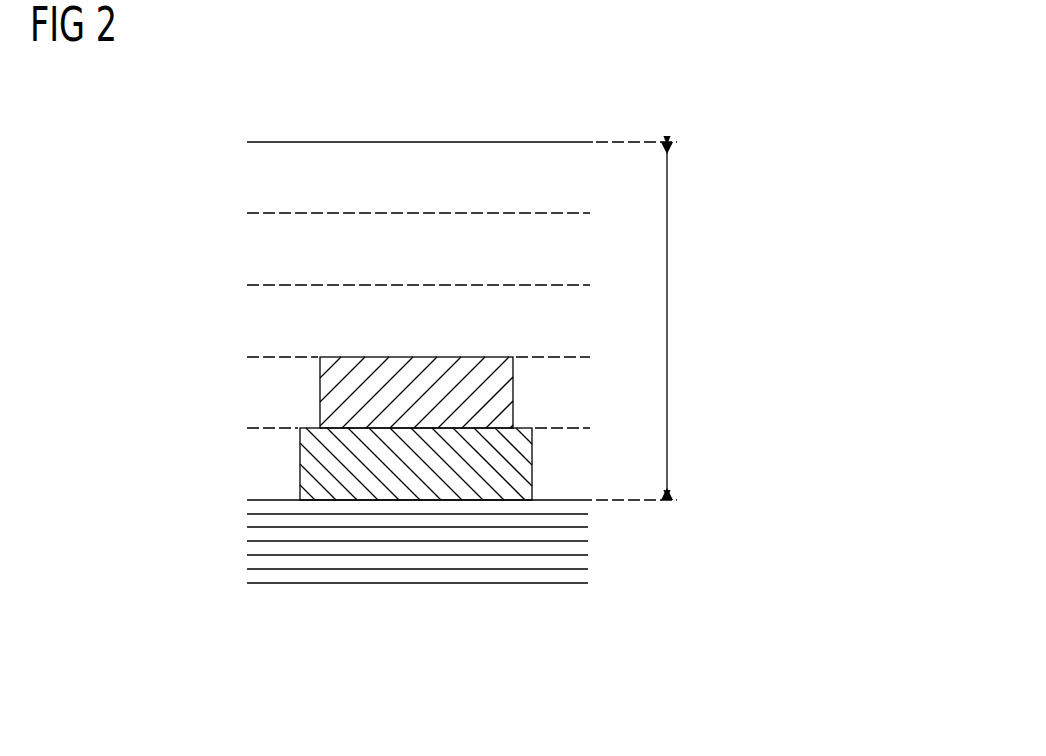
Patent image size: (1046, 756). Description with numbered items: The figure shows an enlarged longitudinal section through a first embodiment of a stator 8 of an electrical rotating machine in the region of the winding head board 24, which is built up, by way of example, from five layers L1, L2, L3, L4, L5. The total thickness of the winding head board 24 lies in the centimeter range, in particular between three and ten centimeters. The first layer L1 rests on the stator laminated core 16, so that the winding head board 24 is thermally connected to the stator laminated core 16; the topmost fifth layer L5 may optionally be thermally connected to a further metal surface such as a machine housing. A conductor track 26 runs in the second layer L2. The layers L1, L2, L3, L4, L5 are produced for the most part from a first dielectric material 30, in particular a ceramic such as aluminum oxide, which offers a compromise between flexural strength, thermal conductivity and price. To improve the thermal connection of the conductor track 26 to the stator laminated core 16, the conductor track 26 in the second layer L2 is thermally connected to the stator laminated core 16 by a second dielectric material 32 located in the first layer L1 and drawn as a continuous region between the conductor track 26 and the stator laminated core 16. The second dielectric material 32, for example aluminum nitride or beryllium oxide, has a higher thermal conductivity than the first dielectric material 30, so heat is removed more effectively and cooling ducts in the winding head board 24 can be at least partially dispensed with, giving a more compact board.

The stator 8 is at (677, 110).
The winding head board 24 is at (517, 173).
The first dielectric material 30 is at (262, 320).
The conductor track 26 is at (320, 396).
The second dielectric material 32 is at (300, 470).
The stator laminated core 16 is at (549, 578).
The first layer L1 is at (575, 469).
The second layer L2 is at (575, 398).
The third layer L3 is at (575, 329).
The fourth layer L4 is at (575, 253).
The fifth layer L5 is at (575, 181).